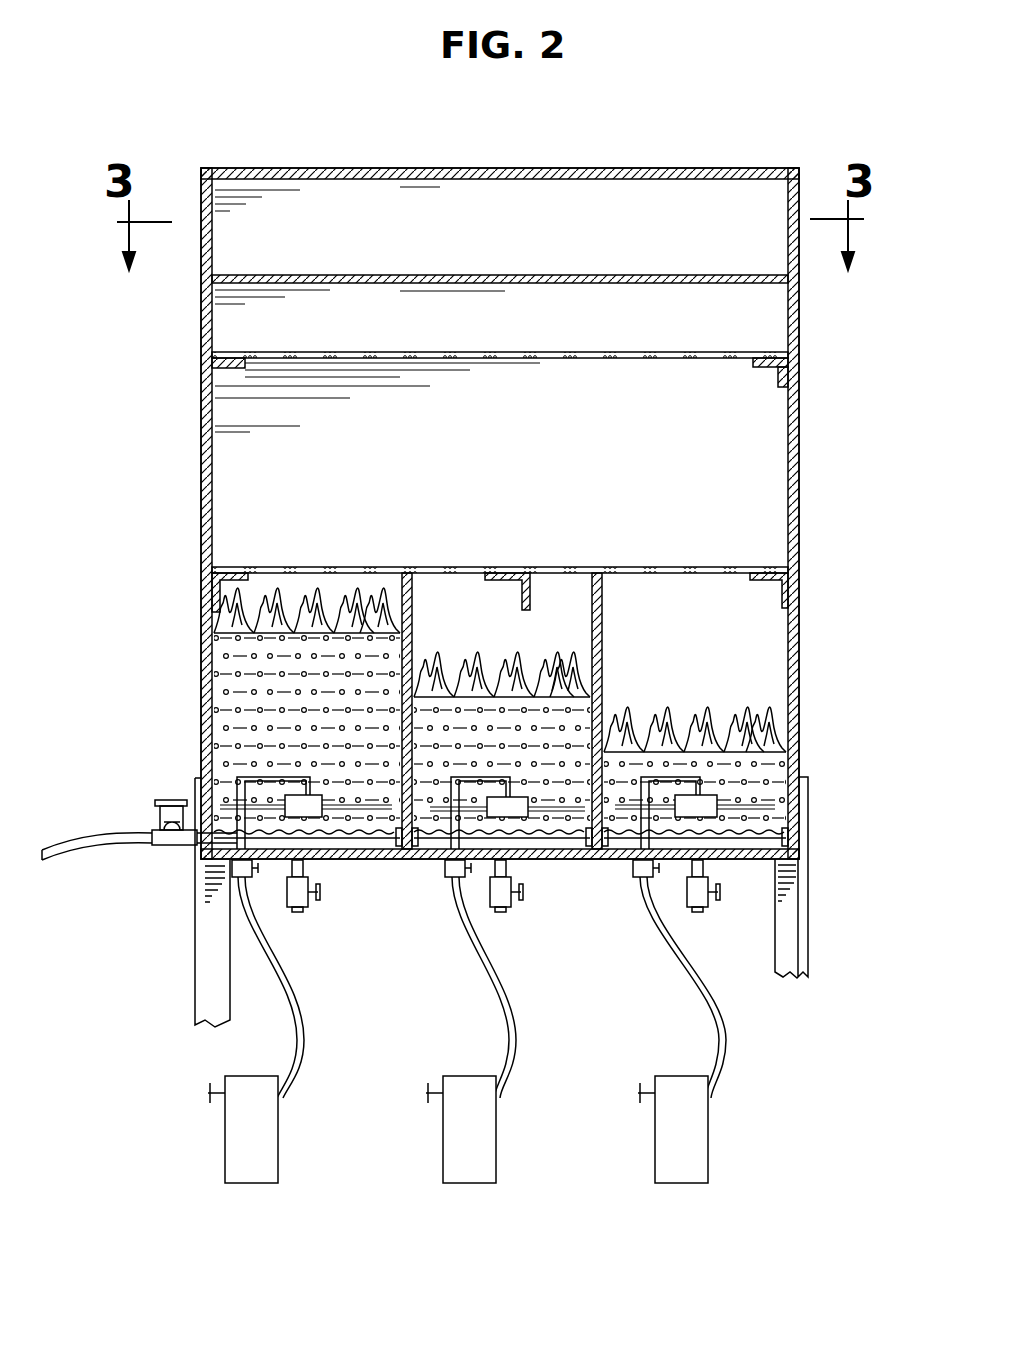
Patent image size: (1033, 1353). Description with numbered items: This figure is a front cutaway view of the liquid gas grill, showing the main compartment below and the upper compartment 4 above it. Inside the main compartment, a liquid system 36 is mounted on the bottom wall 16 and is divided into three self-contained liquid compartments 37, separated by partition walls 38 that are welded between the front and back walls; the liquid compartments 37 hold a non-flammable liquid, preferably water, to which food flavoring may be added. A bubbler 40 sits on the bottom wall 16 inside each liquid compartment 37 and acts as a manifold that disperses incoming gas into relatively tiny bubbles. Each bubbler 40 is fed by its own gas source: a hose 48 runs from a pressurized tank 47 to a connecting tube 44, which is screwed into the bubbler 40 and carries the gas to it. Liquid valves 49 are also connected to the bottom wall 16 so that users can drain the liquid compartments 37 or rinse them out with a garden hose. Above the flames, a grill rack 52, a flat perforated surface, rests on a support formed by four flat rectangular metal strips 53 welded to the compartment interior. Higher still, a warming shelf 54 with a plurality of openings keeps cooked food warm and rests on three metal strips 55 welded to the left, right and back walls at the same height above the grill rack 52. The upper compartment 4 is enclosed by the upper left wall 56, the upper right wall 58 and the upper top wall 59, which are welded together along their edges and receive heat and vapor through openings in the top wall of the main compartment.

The upper compartment 4 is at (194, 203).
The bottom wall 16 is at (370, 864).
The liquid system 36 is at (808, 780).
The liquid compartments 37 is at (295, 635).
The partition walls 38 is at (404, 573).
The bubbler 40 is at (306, 818).
The connecting tube 44 is at (480, 775).
The tank 47 is at (225, 1153).
The hose 48 is at (298, 1085).
The liquid valves 49 is at (298, 913).
The grill rack 52 is at (770, 569).
The metal strips 53 is at (490, 572).
The warming shelf 54 is at (776, 393).
The metal strips 55 is at (753, 362).
The upper left wall 56 is at (203, 170).
The upper right wall 58 is at (799, 186).
The upper top wall 59 is at (568, 168).